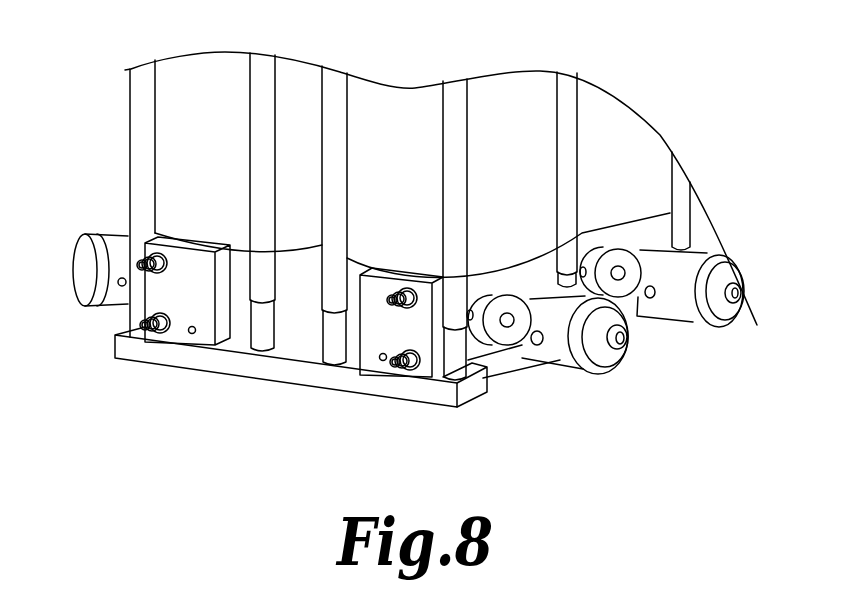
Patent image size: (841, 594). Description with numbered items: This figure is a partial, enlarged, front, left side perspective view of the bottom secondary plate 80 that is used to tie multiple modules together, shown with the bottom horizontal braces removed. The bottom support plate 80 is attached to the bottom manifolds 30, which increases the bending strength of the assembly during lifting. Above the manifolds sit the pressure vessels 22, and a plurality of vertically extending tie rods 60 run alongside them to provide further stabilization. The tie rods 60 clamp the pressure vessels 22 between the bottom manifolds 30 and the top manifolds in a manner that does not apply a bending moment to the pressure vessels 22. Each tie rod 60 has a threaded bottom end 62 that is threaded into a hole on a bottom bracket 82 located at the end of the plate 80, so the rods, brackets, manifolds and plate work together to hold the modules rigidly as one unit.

The pressure vessel 22 is at (527, 157).
The bottom manifold 30 is at (203, 342).
The tie rod 60 is at (452, 198).
The threaded bottom end 62 is at (453, 372).
The bottom secondary plate 80 is at (260, 370).
The bottom bracket 82 is at (473, 390).